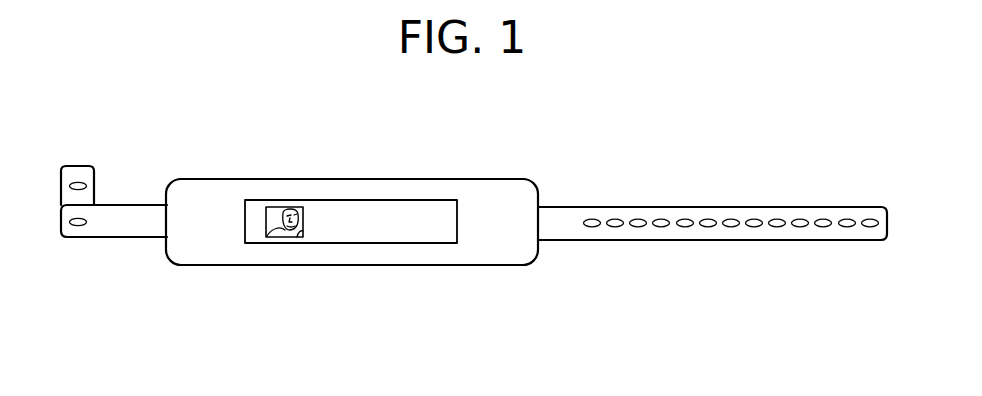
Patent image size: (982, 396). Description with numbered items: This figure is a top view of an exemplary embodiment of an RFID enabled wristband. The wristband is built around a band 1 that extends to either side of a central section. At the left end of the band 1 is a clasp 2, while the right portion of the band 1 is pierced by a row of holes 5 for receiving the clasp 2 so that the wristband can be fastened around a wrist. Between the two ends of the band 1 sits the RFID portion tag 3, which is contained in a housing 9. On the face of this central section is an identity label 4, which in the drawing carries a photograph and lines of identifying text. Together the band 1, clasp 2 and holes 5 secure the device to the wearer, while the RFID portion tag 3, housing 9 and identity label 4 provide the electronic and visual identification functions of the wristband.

The band 1 is at (125, 205).
The clasp 2 is at (79, 165).
The RFID portion tag 3 is at (390, 265).
The identity label 4 is at (257, 200).
The holes 5 is at (792, 218).
The housing 9 is at (271, 270).